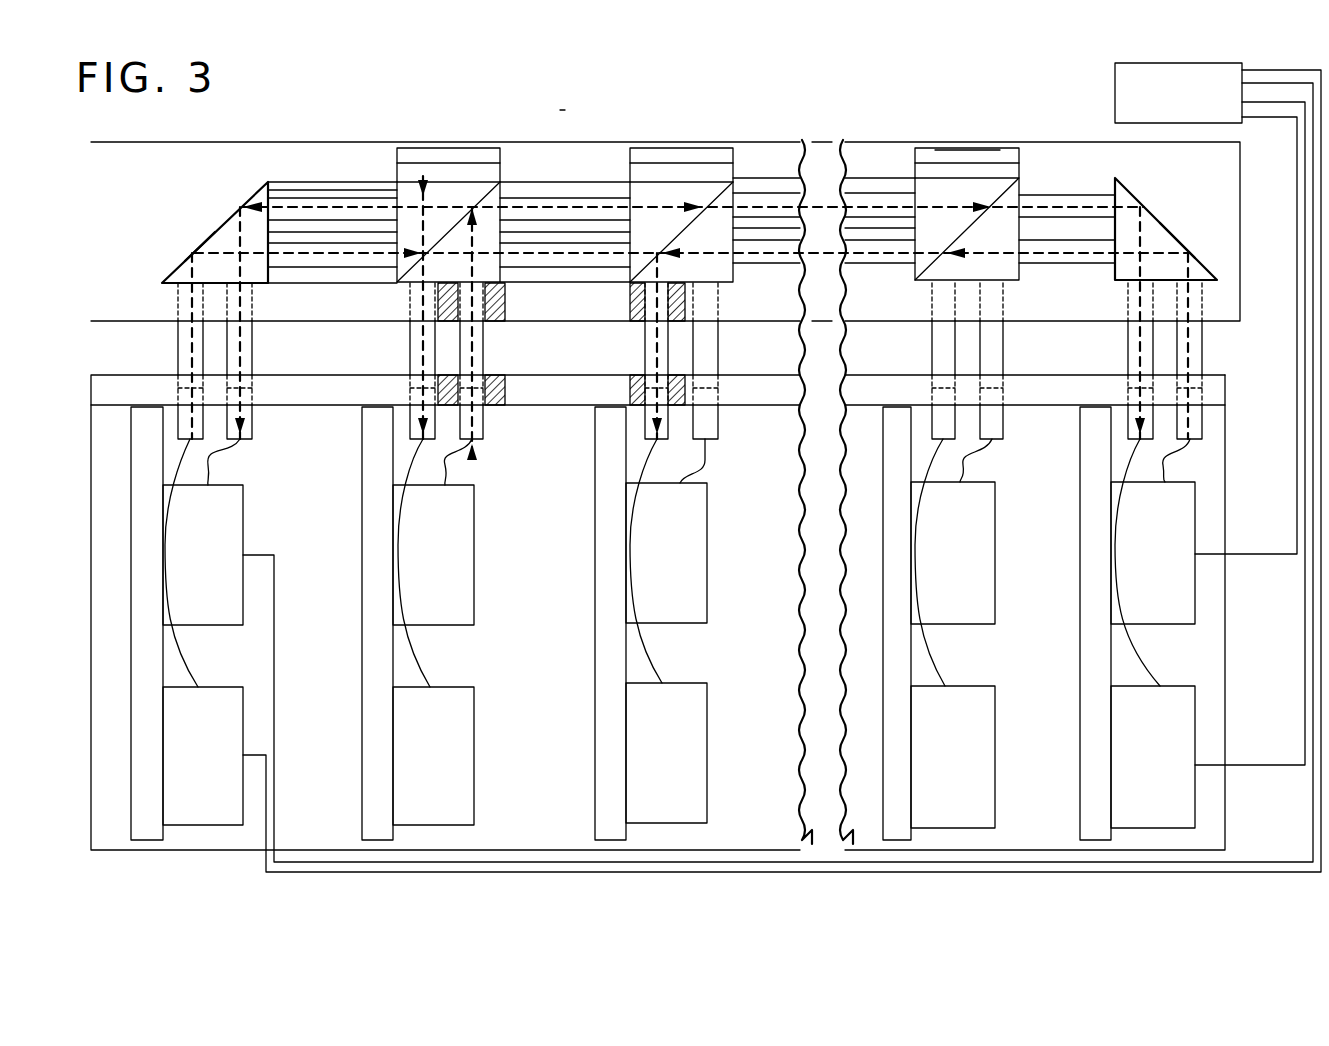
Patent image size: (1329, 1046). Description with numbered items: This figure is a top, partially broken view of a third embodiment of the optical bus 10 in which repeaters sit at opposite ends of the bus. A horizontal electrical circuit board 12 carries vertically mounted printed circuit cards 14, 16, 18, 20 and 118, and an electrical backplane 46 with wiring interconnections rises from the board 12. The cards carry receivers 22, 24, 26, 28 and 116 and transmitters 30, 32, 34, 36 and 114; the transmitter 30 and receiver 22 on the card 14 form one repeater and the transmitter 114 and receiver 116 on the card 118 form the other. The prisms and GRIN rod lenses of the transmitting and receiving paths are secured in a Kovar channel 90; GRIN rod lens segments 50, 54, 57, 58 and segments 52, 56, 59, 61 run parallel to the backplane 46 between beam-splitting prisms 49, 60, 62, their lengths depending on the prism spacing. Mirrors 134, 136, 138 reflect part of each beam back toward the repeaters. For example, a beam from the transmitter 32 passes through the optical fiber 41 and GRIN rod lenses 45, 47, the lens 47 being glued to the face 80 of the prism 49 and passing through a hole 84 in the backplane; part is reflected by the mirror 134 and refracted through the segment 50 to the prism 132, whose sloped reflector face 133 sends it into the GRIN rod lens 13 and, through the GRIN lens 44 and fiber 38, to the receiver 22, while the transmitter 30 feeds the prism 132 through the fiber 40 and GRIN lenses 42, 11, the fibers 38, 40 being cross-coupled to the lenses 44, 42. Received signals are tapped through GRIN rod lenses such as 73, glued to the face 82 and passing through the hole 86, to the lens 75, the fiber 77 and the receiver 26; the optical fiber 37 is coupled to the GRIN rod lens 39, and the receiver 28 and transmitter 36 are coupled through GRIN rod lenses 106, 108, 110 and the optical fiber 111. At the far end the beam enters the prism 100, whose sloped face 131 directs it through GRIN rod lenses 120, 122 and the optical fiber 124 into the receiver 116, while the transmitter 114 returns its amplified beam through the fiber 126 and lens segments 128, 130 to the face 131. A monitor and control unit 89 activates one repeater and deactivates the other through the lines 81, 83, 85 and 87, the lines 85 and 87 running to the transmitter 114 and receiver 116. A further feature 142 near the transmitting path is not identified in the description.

The optical bus 10 is at (558, 108).
The GRIN rod lens 11 is at (180, 348).
The electrical circuit board 12 is at (300, 810).
The GRIN rod lens 13 is at (253, 348).
The printed circuit card 14 is at (140, 680).
The printed circuit card 16 is at (377, 660).
The printed circuit card 18 is at (605, 660).
The printed circuit card 20 is at (885, 612).
The receiver 22 is at (190, 758).
The receiving element 24 is at (421, 761).
The receiver 26 is at (657, 766).
The receiver 28 is at (937, 761).
The transmitter 30 is at (195, 585).
The transmitter 32 is at (424, 571).
The transmitting element 34 is at (657, 566).
The transmitter 36 is at (944, 566).
The optical fiber 37 is at (425, 660).
The optical fiber 38 is at (195, 660).
The GRIN rod lens 39 is at (410, 428).
The optical fiber 40 is at (215, 468).
The optical fiber 41 is at (470, 465).
The GRIN lens 42 is at (180, 417).
The GRIN lens 44 is at (253, 432).
The GRIN rod lens 45 is at (485, 430).
The electrical backplane 46 is at (140, 375).
The GRIN rod lens 47 is at (487, 335).
The beam-splitting prism 49 is at (422, 178).
The GRIN rod lens segment 50 is at (303, 197).
The GRIN rod lens segment 52 is at (335, 284).
The GRIN rod lens segment 54 is at (607, 197).
The GRIN rod lens segment 56 is at (568, 263).
The GRIN rod lens segment 57 is at (790, 192).
The GRIN rod lens segment 58 is at (876, 192).
The GRIN rod lens segment 59 is at (800, 280).
The beam-splitting prism 60 is at (680, 190).
The GRIN rod lens segment 61 is at (876, 280).
The beam-splitting prism 62 is at (975, 188).
The GRIN rod lens 73 is at (645, 342).
The receiving GRIN rod lens 75 is at (645, 432).
The optical fiber 77 is at (628, 468).
The face 80 is at (408, 284).
The line 81 is at (276, 580).
The face 82 is at (733, 300).
The line 83 is at (268, 790).
The hole 84 is at (445, 380).
The line 85 is at (1295, 555).
The hole 86 is at (635, 378).
The line 87 is at (1292, 765).
The monitor and control unit 89 is at (1157, 101).
The channel 90 is at (153, 168).
The prism 100 is at (1150, 225).
The GRIN rod lens 106 is at (1005, 357).
The GRIN rod lens 108 is at (1005, 450).
The GRIN rod lens 110 is at (930, 415).
The optical fiber 111 is at (940, 663).
The transmitter 114 is at (1136, 548).
The receiver 116 is at (1126, 766).
The card 118 is at (1090, 565).
The GRIN rod lens 120 is at (1128, 335).
The GRIN rod lens 122 is at (1128, 420).
The optical fiber 124 is at (1148, 665).
The optical fiber 126 is at (1205, 458).
The GRIN rod lens segment 128 is at (1203, 425).
The GRIN rod lens segment 130 is at (1203, 342).
The sloped reflecting face 131 is at (1182, 250).
The prism 132 is at (230, 232).
The sloped reflector face 133 is at (203, 245).
The mirror 134 is at (467, 155).
The mirror 136 is at (680, 150).
The mirror 138 is at (952, 150).
The light beam 142 is at (288, 190).